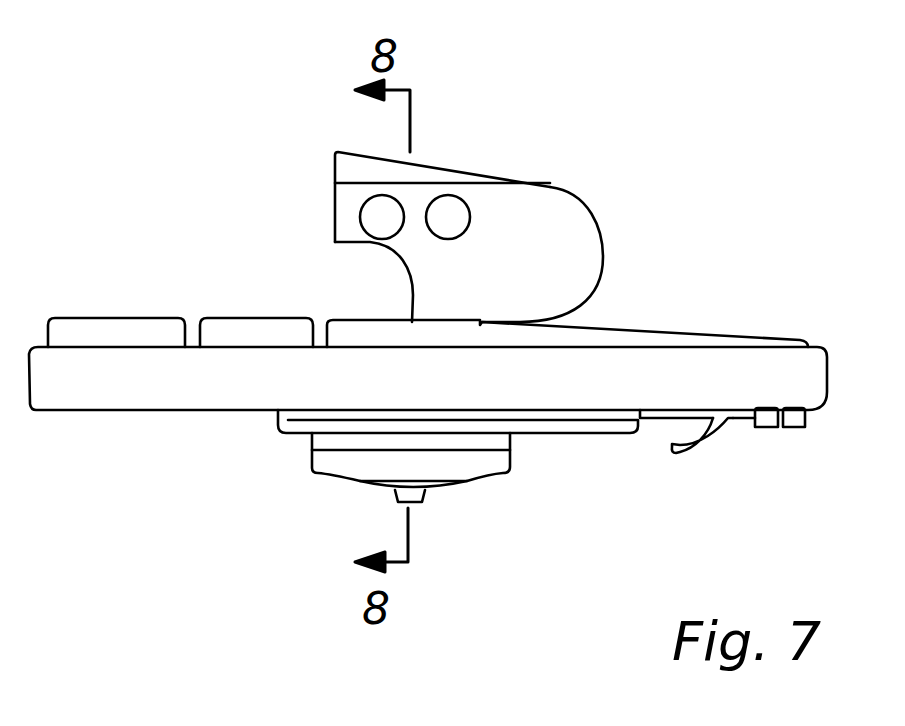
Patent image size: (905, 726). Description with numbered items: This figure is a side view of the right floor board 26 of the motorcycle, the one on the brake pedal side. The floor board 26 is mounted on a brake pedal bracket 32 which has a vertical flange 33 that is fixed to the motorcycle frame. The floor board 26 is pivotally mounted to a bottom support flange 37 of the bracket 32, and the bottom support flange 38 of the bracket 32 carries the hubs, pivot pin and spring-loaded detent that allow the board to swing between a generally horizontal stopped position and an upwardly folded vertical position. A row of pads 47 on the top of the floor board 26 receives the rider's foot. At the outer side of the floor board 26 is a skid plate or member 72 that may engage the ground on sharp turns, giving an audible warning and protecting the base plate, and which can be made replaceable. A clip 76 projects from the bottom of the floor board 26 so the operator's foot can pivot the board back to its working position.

The right floor board 26 is at (172, 380).
The brake pedal bracket 32 is at (513, 448).
The vertical flange 33 is at (534, 213).
The bottom support flange 37 is at (650, 365).
The bottom support flange 38 is at (463, 468).
The pads 47 is at (352, 320).
The skid plate 72 is at (308, 424).
The clip 76 is at (697, 447).